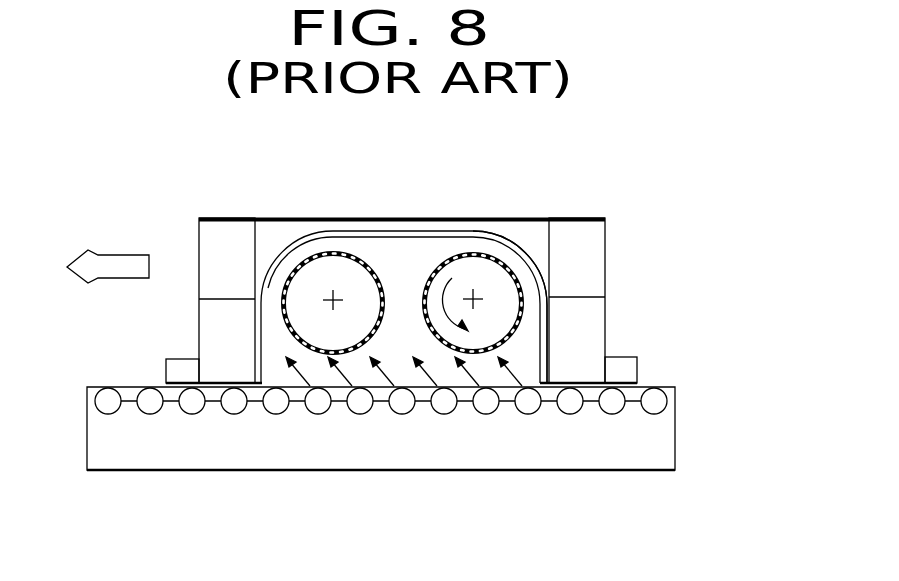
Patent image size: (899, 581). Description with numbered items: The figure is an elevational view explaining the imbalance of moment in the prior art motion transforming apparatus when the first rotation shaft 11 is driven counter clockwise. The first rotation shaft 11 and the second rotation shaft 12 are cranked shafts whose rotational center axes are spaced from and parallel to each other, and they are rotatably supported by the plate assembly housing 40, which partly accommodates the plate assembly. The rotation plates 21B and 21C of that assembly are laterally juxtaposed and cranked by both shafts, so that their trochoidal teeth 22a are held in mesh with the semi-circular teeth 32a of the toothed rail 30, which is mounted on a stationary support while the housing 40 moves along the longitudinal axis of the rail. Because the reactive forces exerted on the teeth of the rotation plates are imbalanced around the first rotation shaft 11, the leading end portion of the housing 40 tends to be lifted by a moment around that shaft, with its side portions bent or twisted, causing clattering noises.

The first rotation shaft 11 is at (482, 267).
The second rotation shaft 12 is at (307, 275).
The rotation plate 21B is at (407, 236).
The rotation plate 21C is at (527, 247).
The plate assembly housing 40 is at (605, 268).
The toothed rail 30 is at (419, 461).
The trochoidal teeth 22a is at (338, 402).
The semi-circular teeth 32a is at (548, 390).